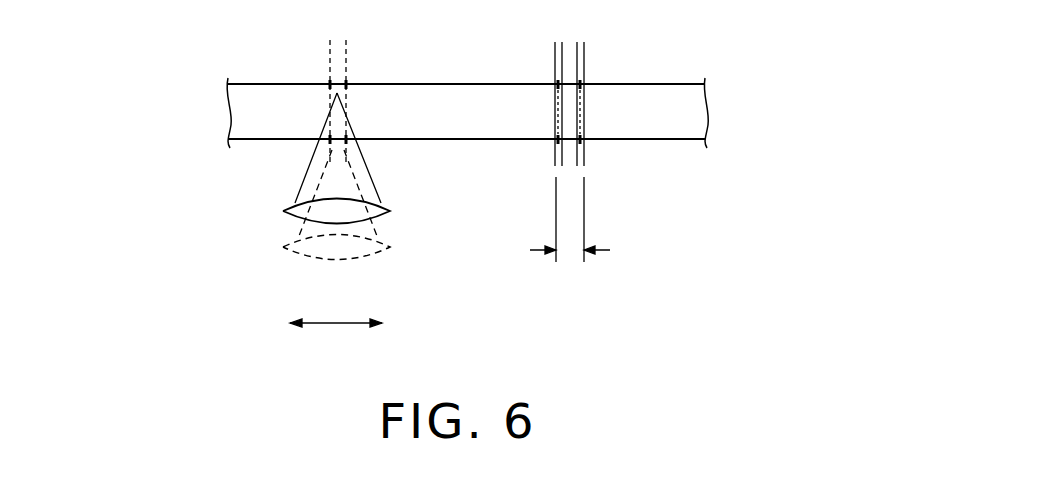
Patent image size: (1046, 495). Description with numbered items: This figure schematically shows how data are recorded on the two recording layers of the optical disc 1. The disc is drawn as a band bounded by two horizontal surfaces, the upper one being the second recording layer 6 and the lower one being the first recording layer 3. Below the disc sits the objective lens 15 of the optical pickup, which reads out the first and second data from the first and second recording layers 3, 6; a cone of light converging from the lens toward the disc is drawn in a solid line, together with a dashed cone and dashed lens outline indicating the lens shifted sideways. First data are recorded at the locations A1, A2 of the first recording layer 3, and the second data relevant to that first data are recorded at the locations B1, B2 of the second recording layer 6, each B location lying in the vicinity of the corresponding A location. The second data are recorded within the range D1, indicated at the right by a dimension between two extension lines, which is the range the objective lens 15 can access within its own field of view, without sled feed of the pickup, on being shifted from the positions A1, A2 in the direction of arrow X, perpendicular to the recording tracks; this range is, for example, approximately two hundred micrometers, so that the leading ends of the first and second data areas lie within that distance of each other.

The optical disc 1 is at (198, 100).
The second recording layer 6 is at (256, 84).
The first recording layer 3 is at (257, 141).
The objective lens 15 is at (290, 213).
The location in second recording layer B1 is at (347, 84).
The location in first recording layer A1 is at (340, 141).
The location in second recording layer B2 is at (572, 84).
The location in first recording layer A2 is at (568, 140).
The range D1 is at (570, 235).
The arrow X is at (336, 336).